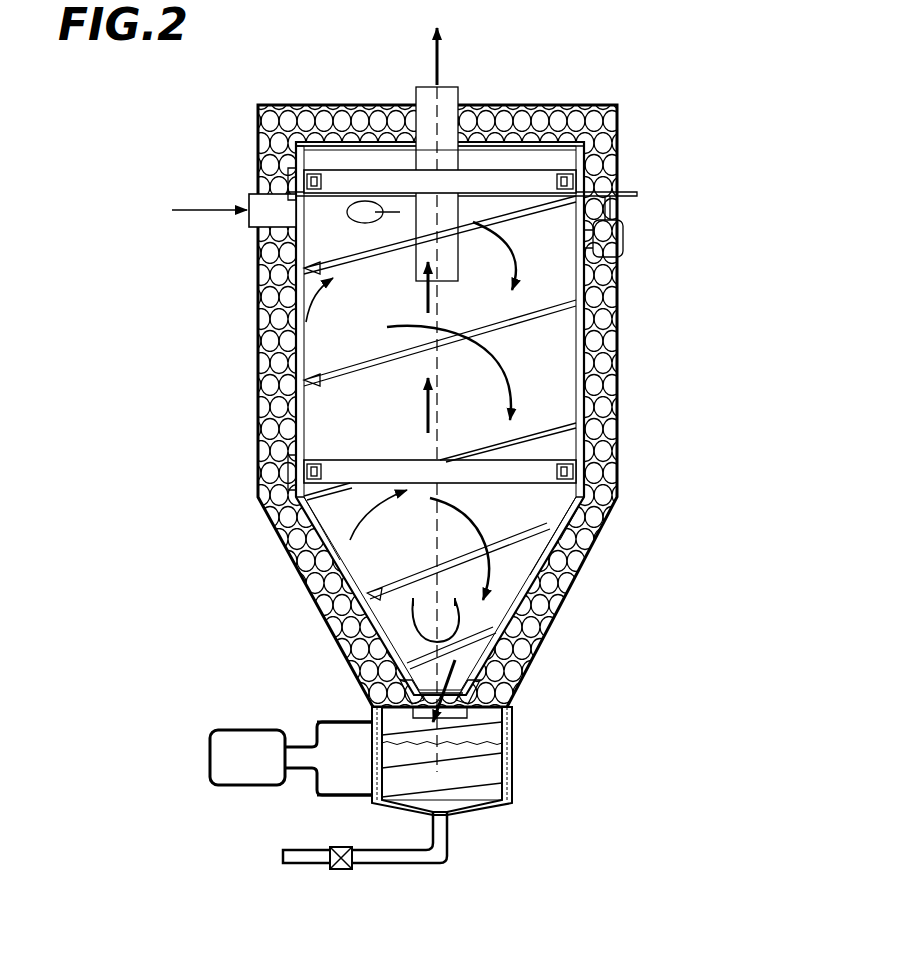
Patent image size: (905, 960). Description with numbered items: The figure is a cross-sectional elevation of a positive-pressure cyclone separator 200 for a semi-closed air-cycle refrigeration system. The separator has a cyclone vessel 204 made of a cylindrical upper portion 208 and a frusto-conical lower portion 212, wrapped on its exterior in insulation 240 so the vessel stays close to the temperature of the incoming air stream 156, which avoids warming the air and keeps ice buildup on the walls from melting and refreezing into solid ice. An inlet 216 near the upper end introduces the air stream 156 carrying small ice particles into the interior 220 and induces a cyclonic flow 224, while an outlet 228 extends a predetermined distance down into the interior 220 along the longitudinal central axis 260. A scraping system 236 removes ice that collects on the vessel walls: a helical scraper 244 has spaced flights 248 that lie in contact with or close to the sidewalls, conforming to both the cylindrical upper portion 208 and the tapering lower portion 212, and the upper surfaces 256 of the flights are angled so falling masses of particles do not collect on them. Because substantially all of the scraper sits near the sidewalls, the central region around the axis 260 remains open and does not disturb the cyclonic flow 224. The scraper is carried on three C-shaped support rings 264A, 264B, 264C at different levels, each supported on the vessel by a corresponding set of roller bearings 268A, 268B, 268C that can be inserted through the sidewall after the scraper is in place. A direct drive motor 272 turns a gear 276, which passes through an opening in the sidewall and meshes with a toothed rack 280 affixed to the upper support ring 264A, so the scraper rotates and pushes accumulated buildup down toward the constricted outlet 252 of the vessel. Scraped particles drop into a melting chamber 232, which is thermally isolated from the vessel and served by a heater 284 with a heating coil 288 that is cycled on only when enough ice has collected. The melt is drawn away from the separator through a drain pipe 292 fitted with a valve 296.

The air stream 156 is at (440, 62).
The cyclone separator 200 is at (705, 258).
The cyclone vessel 204 is at (592, 360).
The cylindrical upper portion 208 is at (392, 312).
The frusto-conical lower portion 212 is at (427, 555).
The inlet 216 is at (249, 197).
The interior 220 is at (562, 374).
The cyclonic flow 224 is at (530, 264).
The outlet 228 is at (460, 95).
The melting chamber 232 is at (512, 712).
The scraping system 236 is at (288, 332).
The insulation 240 is at (600, 125).
The helical scraper 244 is at (586, 462).
The flights 248 is at (437, 458).
The outlet 252 is at (372, 725).
The upper surfaces 256 is at (300, 441).
The longitudinal central axis 260 is at (388, 105).
The support ring 264A is at (300, 122).
The support ring 264B is at (345, 525).
The support ring 264C is at (470, 633).
The roller bearings 268A is at (350, 160).
The roller bearings 268B is at (610, 512).
The roller bearings 268C is at (412, 650).
The direct drive motor 272 is at (640, 235).
The gear 276 is at (620, 192).
The toothed rack 280 is at (578, 105).
The heater 284 is at (212, 749).
The heating coil 288 is at (500, 778).
The drain pipe 292 is at (404, 866).
The valve 296 is at (338, 848).